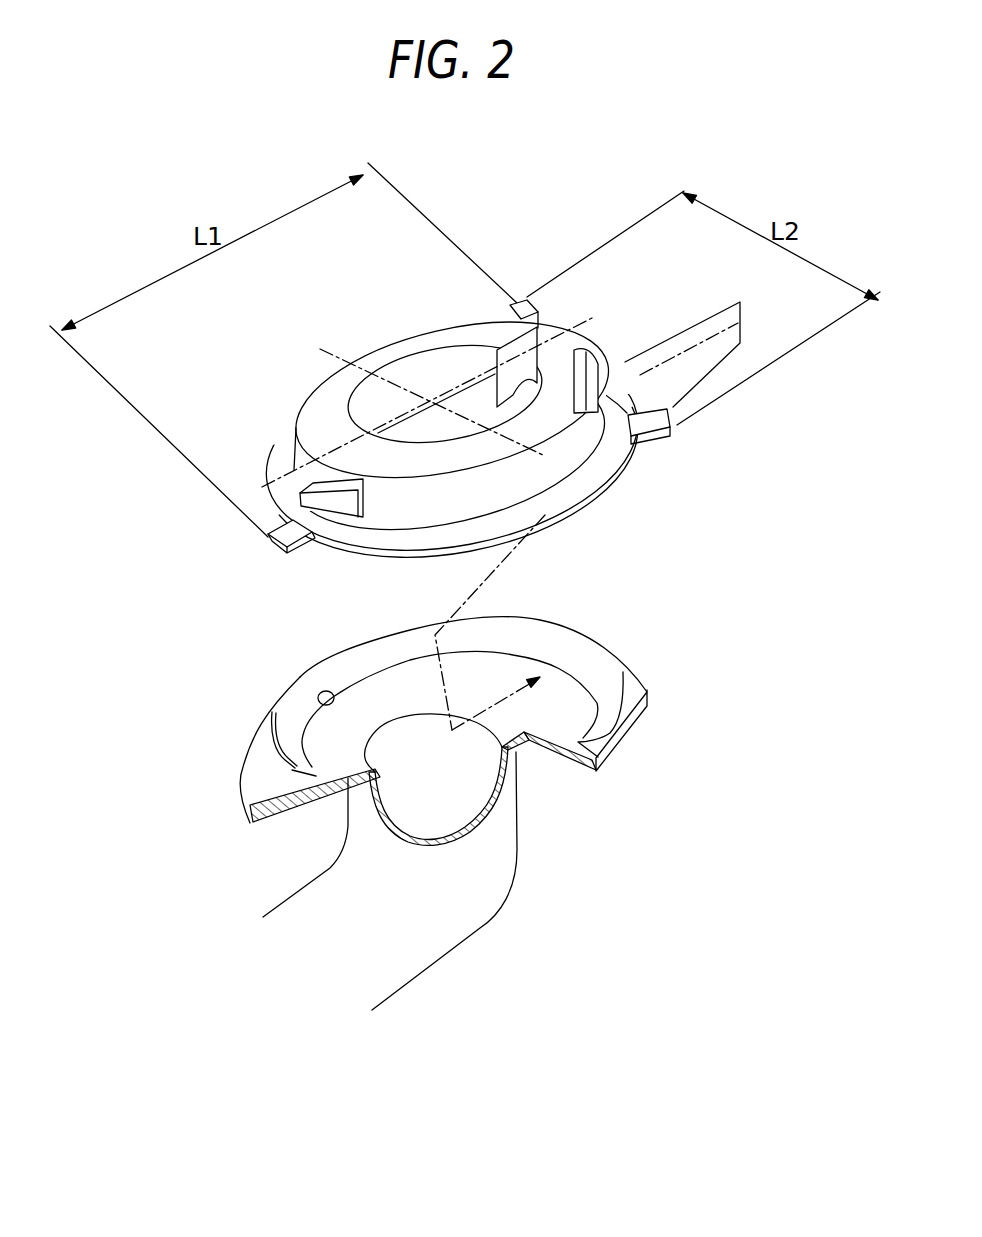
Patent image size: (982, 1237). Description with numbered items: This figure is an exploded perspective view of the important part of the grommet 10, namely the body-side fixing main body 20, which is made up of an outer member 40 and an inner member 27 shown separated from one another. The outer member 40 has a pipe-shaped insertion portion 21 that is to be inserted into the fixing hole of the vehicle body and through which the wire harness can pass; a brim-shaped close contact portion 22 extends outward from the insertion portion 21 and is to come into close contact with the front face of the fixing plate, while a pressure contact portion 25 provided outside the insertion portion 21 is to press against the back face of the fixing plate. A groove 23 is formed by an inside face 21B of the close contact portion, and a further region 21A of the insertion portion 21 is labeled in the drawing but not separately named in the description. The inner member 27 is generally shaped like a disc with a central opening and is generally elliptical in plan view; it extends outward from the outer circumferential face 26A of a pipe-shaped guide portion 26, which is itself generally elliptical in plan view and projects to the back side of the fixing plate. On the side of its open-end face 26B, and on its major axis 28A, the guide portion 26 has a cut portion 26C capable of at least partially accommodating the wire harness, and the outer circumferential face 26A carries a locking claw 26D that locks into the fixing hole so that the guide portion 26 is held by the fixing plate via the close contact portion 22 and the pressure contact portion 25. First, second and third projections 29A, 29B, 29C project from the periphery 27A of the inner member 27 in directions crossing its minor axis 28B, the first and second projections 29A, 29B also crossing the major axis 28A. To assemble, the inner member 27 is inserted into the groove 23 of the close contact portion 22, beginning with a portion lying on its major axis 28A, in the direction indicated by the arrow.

The lamp assembly 10 is at (744, 620).
The body-side fixing main body 20 is at (676, 570).
The insertion portion 21 is at (347, 826).
The cut wall section 21A is at (250, 787).
The inside face 21B is at (328, 692).
The close contact portion 22 is at (245, 742).
The groove 23 is at (576, 765).
The pressure contact portion 25 is at (583, 655).
The guide portion 26 is at (417, 314).
The outer circumferential face 26A is at (437, 503).
The open-end face 26B is at (318, 405).
The cut portion 26C is at (545, 315).
The locking claw 26D is at (600, 380).
The inner member 27 is at (580, 480).
The periphery 27A is at (578, 510).
The major axis 28A is at (262, 487).
The minor axis 28B is at (322, 345).
The first projection 29A is at (516, 303).
The second projection 29B is at (666, 426).
The third projection 29C is at (270, 538).
The outer member 40 is at (645, 718).